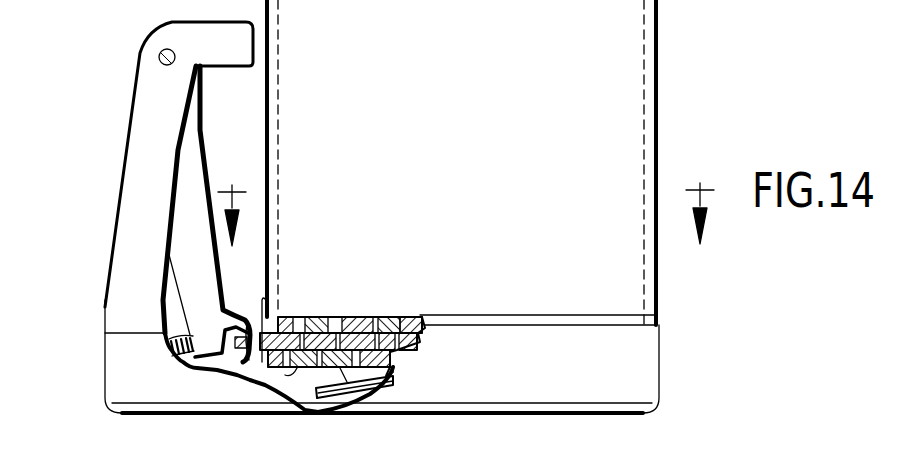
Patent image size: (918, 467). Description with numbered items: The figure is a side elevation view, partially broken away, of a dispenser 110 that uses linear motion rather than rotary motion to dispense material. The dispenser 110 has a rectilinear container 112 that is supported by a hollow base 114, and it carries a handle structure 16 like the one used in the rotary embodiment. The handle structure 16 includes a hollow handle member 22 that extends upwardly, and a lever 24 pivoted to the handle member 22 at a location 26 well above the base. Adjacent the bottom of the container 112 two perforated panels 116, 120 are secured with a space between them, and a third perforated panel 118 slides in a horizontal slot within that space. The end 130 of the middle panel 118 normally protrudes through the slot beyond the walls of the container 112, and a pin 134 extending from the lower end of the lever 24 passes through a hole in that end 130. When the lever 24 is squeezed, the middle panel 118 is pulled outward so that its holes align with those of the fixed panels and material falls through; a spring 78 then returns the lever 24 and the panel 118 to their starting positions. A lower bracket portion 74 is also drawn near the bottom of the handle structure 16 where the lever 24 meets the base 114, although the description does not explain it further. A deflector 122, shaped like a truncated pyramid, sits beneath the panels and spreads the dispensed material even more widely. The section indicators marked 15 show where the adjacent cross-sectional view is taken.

The section line 15- 15 is at (466, 233).
The handle structure 16 is at (112, 129).
The handle member 22 is at (112, 230).
The lever 24 is at (202, 160).
The pivot location 26 is at (165, 48).
The lower bracket 74 is at (208, 367).
The spring 78 is at (167, 345).
The dispenser 110 is at (689, 41).
The container 112 is at (658, 134).
The base 114 is at (660, 357).
The perforated panel 116 is at (398, 318).
The middle perforated panel 118 is at (326, 318).
The perforated panel 120 is at (297, 368).
The deflector 122 is at (343, 393).
The end of middle panel 130 is at (264, 300).
The pin 134 is at (233, 363).